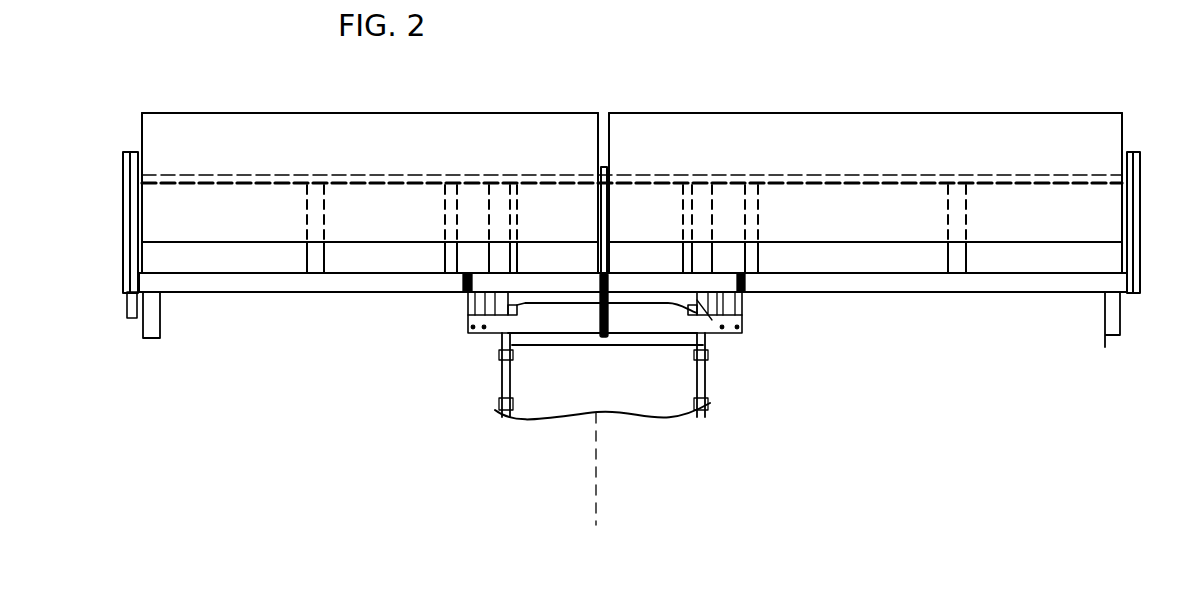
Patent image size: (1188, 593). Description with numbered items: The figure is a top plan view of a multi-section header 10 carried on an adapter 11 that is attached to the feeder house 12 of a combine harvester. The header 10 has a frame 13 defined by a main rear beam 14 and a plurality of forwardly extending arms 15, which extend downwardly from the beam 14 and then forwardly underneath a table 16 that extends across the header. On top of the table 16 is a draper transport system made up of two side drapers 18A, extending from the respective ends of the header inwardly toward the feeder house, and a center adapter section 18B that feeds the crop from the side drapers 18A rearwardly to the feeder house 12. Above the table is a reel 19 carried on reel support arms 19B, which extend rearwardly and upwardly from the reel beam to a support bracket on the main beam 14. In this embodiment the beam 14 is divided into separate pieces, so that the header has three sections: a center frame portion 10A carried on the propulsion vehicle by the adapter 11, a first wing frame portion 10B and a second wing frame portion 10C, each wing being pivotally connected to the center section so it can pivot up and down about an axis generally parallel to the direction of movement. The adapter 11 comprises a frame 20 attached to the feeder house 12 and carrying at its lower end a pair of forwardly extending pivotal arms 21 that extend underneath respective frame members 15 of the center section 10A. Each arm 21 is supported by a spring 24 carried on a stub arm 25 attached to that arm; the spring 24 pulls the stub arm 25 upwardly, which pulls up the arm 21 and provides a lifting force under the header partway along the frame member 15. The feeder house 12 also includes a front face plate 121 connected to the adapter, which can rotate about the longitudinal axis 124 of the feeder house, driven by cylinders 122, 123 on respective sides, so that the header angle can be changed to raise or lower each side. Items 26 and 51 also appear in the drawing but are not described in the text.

The header 10 is at (90, 106).
The center frame portion 10A is at (649, 202).
The first wing frame portion 10B is at (249, 304).
The second wing frame portion 10C is at (898, 306).
The adapter 11 is at (500, 347).
The feeder house 12 is at (710, 397).
The frame 13 is at (299, 293).
The main rear beam 14 is at (358, 293).
The forwardly extending arms 15 is at (330, 203).
The table 16 is at (238, 203).
The side drapers 18A is at (275, 203).
The center adapter section 18B is at (571, 198).
The reel 19 is at (488, 105).
The reel support arms 19B is at (138, 222).
The frame 20 is at (643, 325).
The pivotal arms 21 is at (505, 318).
The spring 24 is at (470, 330).
The stub arm 25 is at (468, 300).
The center rod 26 is at (590, 343).
The foot 51 is at (160, 322).
The front face plate 121 is at (557, 340).
The cylinder 122 is at (517, 417).
The cylinder 123 is at (715, 403).
The longitudinal axis 124 is at (593, 507).